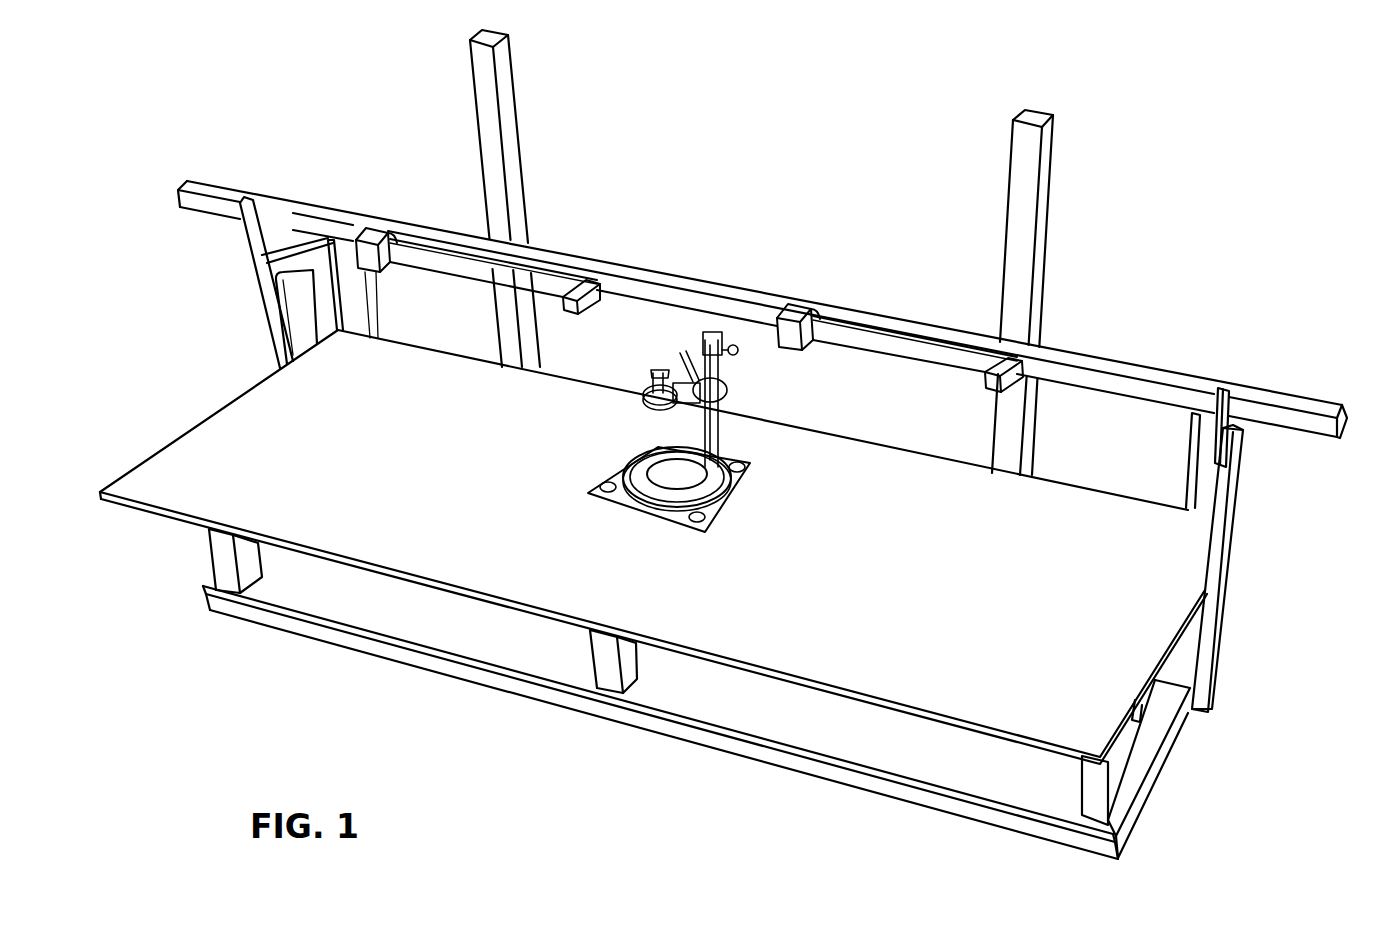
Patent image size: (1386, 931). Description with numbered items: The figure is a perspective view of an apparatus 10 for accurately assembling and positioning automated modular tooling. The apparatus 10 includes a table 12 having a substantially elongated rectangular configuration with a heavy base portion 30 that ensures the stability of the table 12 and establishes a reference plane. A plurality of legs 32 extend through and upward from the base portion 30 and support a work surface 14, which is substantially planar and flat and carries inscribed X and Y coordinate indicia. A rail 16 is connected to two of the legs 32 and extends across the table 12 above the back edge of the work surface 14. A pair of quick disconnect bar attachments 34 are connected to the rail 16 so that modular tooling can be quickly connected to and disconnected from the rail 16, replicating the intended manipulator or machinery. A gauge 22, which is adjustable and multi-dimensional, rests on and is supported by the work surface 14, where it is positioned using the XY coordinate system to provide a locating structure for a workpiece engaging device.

The apparatus 10 is at (895, 116).
The table 12 is at (1238, 520).
The work surface 14 is at (945, 633).
The rail 16 is at (1295, 398).
The gauge 22 is at (731, 507).
The base portion 30 is at (1165, 722).
The legs 32 is at (514, 134).
The quick disconnect bar attachments 34 is at (548, 277).